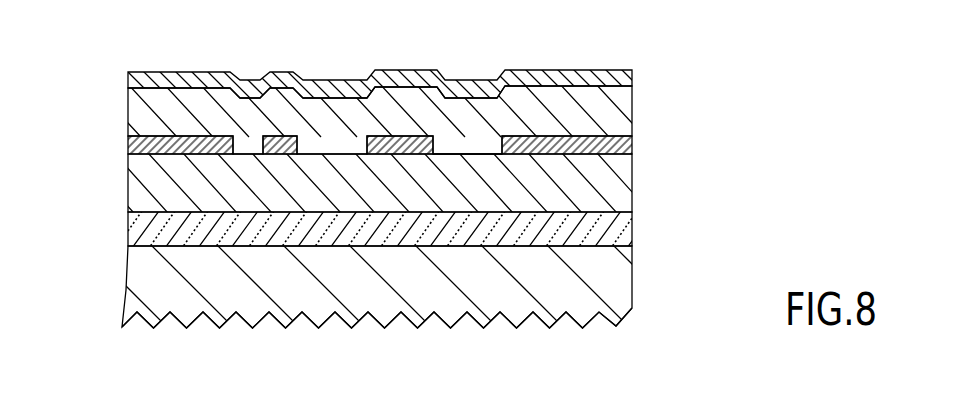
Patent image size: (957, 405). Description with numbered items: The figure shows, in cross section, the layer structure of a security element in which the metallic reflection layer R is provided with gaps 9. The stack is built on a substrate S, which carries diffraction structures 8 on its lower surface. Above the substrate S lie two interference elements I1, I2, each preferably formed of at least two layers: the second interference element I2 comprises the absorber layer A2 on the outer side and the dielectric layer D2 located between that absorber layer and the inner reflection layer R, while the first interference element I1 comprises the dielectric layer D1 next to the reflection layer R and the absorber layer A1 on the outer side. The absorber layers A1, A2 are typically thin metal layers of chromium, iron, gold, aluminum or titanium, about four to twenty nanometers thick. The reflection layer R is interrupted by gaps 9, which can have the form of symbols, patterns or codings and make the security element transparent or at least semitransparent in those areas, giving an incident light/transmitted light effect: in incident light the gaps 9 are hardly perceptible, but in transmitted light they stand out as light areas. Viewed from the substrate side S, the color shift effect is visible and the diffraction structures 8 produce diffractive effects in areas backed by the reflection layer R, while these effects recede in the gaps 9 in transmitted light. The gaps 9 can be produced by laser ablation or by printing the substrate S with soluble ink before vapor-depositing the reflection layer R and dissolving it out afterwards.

The absorber layer A1 is at (128, 80).
The dielectric layer D1 is at (147, 114).
The reflection layer R is at (128, 148).
The dielectric layer D2 is at (153, 187).
The absorber layer A2 is at (140, 225).
The gaps 9 is at (480, 137).
The interference element I1 is at (634, 70).
The interference element I2 is at (634, 152).
The substrate S is at (612, 281).
The diffraction structures 8 is at (595, 312).